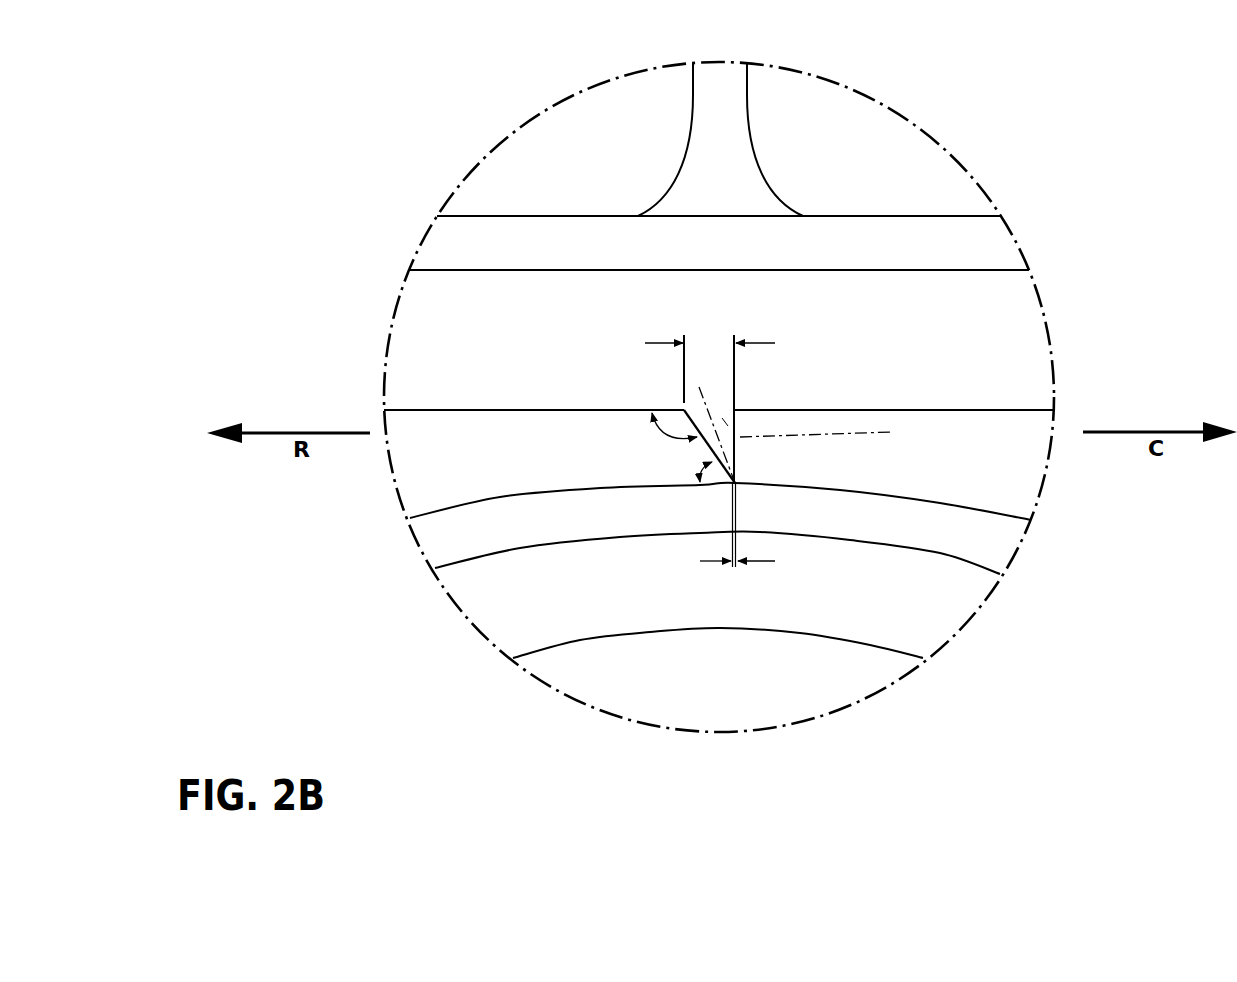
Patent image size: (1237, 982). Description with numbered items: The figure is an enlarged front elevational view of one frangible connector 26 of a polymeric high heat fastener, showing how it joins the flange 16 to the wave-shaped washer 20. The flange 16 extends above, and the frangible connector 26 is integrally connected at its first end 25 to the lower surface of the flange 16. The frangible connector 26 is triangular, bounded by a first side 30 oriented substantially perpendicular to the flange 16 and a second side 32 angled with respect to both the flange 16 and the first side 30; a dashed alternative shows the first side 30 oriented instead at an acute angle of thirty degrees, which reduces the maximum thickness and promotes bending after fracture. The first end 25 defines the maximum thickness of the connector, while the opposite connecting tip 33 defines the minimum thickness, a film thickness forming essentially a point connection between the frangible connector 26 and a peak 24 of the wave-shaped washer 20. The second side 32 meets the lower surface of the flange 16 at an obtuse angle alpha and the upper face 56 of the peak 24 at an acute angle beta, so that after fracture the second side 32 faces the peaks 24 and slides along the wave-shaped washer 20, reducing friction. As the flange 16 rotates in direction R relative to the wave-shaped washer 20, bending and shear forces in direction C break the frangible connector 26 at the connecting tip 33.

The flange 16 is at (497, 270).
The wave-shaped washer 20 is at (827, 612).
The peak 24 is at (755, 490).
The first end 25 is at (722, 422).
The frangible connector 26 is at (742, 396).
The first side 30 is at (737, 423).
The second side 32 is at (698, 446).
The connecting tip 33 is at (745, 478).
The upper face 56 is at (1000, 510).